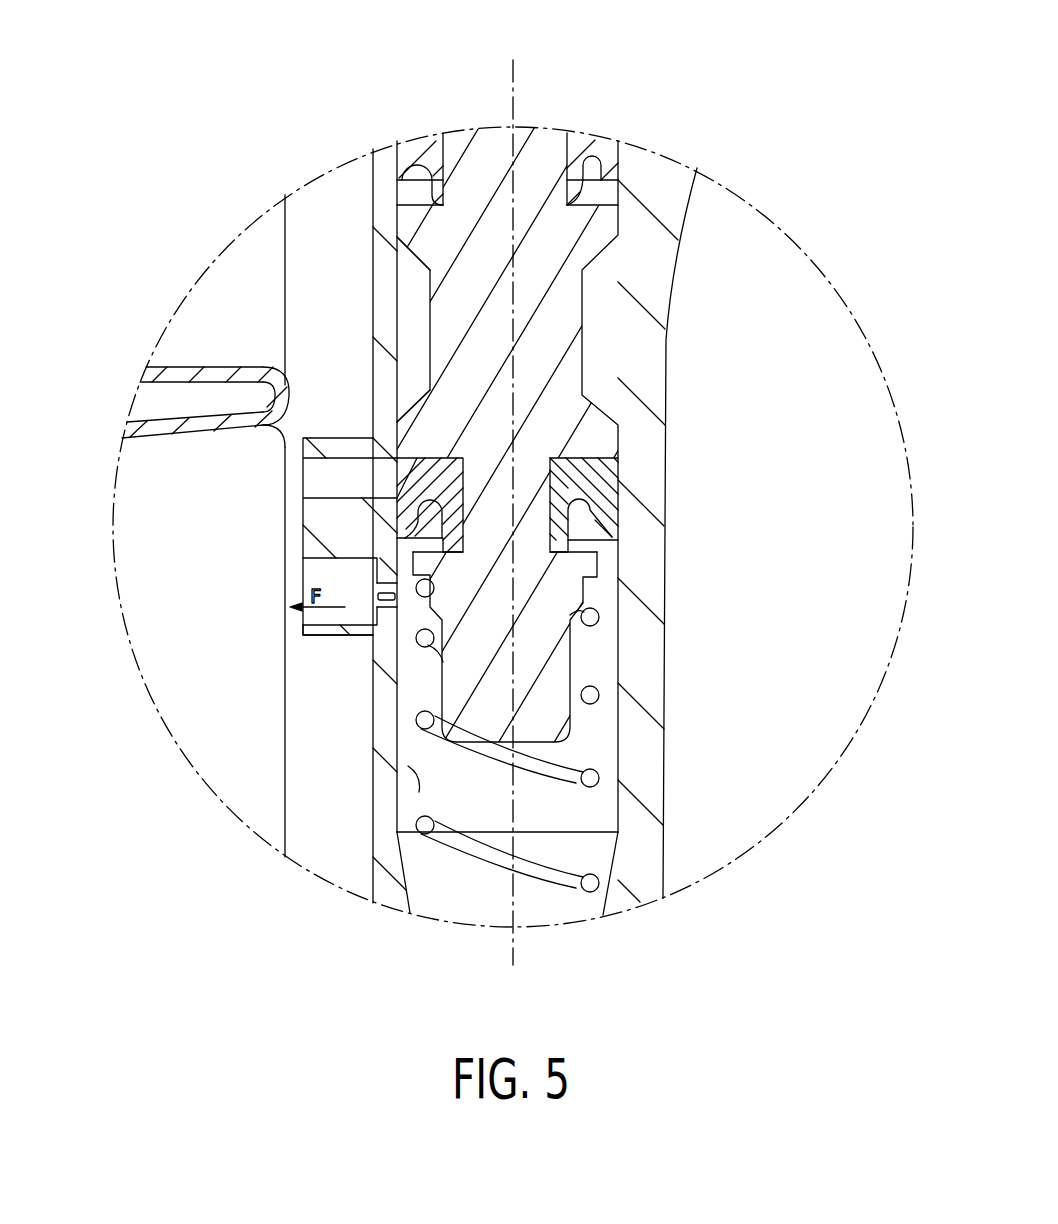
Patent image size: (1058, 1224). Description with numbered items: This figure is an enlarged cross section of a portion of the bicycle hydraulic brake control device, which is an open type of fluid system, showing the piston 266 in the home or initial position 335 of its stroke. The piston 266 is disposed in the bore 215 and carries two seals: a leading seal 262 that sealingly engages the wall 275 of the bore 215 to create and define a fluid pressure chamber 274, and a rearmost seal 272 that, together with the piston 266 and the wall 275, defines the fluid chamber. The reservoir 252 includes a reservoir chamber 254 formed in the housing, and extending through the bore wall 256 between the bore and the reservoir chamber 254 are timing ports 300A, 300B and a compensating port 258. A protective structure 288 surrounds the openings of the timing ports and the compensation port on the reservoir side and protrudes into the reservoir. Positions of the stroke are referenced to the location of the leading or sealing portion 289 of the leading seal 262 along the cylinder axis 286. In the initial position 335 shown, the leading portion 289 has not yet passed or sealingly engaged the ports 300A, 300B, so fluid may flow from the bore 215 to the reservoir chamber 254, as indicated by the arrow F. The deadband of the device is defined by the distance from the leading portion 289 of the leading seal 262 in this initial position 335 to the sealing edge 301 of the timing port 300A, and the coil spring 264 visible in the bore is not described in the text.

The cylinder axis 286 is at (516, 90).
The rearmost seal 272 is at (603, 150).
The reservoir chamber 254 is at (330, 217).
The bore 215 is at (412, 327).
The compensating port 258 is at (355, 467).
The leading portion of the leading seal 289 is at (415, 530).
The reservoir 252 is at (160, 550).
The timing port 300B is at (335, 585).
The protective structure 288 is at (312, 632).
The timing port 300A is at (377, 606).
The sealing edge 301 is at (395, 612).
The bore wall 256 is at (380, 703).
The wall of the bore 275 is at (415, 765).
The piston 266 is at (598, 440).
The leading seal 262 is at (593, 493).
The initial position 335 is at (596, 500).
The fluid pressure chamber 274 is at (600, 730).
The spring 264 is at (577, 762).